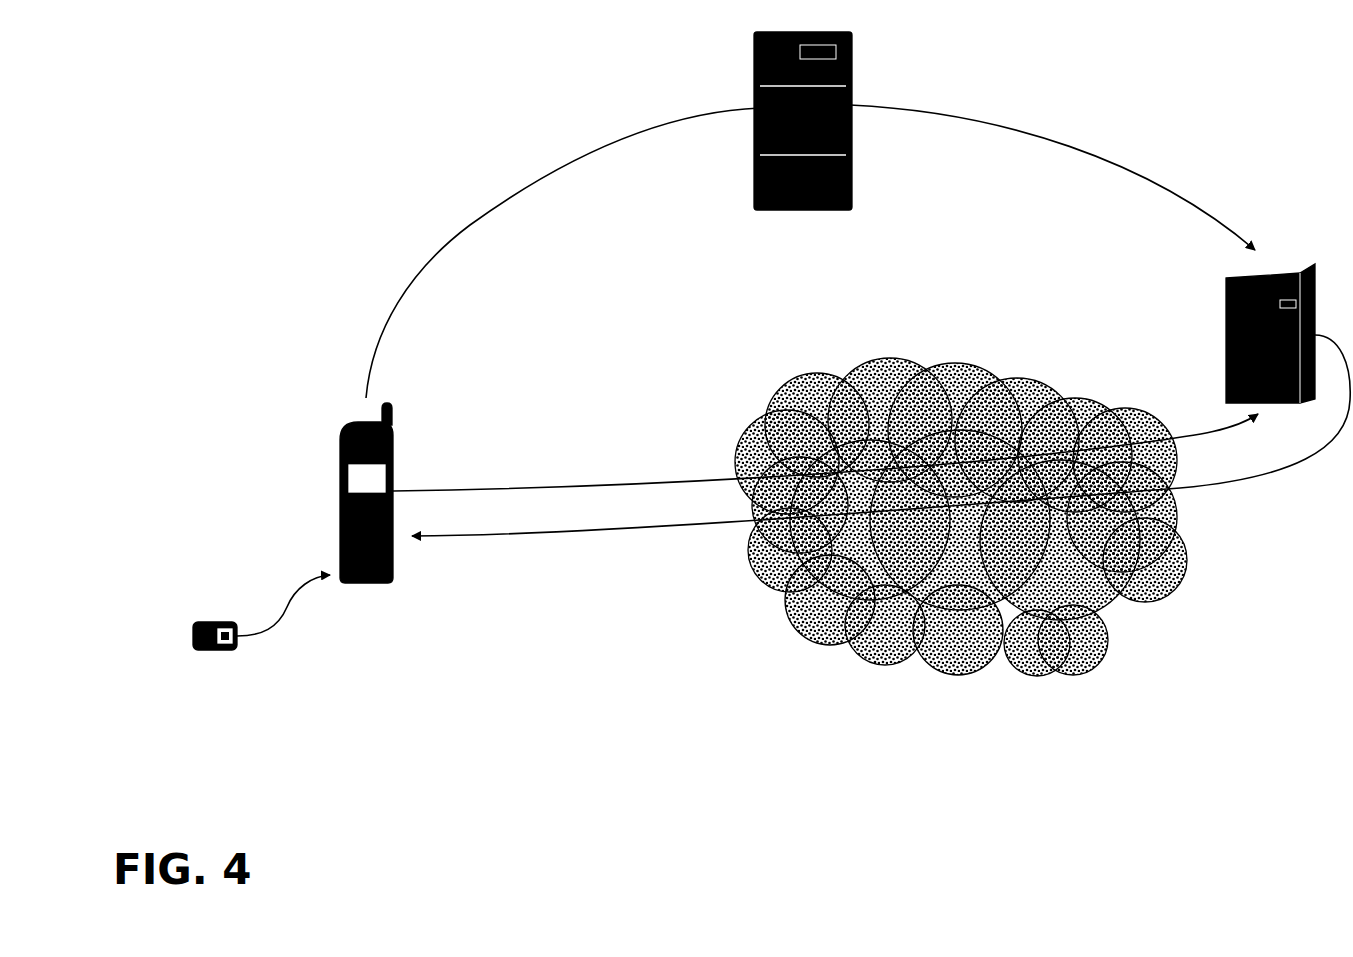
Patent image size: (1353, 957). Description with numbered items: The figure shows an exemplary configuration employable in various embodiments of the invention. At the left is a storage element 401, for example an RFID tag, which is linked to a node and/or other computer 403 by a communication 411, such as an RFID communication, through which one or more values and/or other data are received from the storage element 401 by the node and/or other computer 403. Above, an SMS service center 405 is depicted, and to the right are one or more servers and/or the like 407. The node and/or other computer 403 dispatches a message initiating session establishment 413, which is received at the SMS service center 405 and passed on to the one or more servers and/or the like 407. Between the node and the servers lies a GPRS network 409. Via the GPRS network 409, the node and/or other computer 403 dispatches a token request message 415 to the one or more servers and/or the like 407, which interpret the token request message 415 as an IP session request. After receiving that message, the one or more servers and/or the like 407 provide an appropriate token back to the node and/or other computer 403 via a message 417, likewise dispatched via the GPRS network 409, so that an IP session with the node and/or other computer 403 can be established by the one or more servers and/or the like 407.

The storage element 401 is at (230, 655).
The node and/or other computer 403 is at (393, 575).
The SMS service center 405 is at (800, 220).
The servers and/or the like 407 is at (1218, 330).
The GPRS network 409 is at (1087, 650).
The communication 411 is at (287, 615).
The message initiating session establishment 413 is at (460, 242).
The token request message 415 is at (510, 490).
The message 417 is at (615, 535).